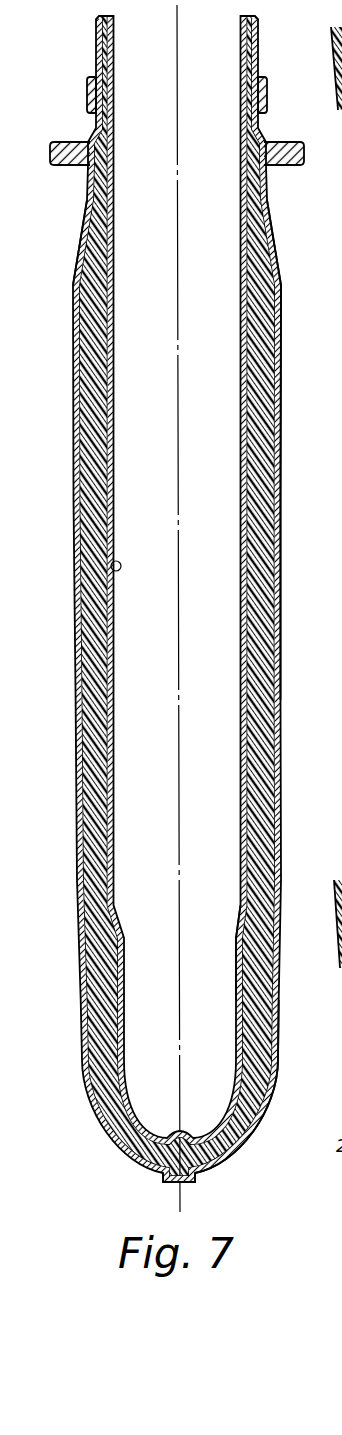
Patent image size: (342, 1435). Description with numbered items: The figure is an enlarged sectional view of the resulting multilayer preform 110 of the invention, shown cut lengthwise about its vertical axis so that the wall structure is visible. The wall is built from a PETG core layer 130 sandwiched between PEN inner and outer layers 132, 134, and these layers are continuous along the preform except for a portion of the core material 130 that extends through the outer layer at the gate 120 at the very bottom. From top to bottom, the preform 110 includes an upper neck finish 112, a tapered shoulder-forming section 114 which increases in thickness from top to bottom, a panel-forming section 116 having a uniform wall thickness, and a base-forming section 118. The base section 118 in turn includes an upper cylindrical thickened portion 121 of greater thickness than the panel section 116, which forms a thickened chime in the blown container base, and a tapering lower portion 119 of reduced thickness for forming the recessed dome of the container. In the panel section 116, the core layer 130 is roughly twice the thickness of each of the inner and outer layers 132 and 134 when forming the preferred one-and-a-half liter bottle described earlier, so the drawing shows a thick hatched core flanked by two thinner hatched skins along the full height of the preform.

The preform 110 is at (286, 444).
The upper neck finish 112 is at (257, 62).
The tapered shoulder-forming section 114 is at (270, 246).
The panel-forming section 116 is at (278, 508).
The base-forming section 118 is at (280, 1040).
The tapering lower portion 119 is at (278, 1083).
The gate 120 is at (170, 1183).
The upper cylindrical thickened portion 121 is at (282, 968).
The core layer 130 is at (92, 482).
The inner layer 132 is at (103, 556).
The outer layer 134 is at (73, 617).